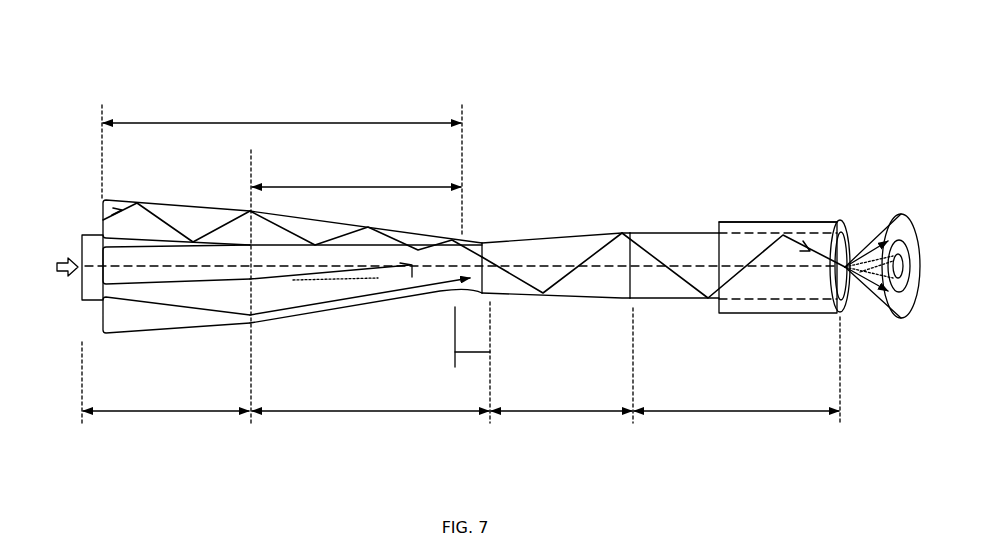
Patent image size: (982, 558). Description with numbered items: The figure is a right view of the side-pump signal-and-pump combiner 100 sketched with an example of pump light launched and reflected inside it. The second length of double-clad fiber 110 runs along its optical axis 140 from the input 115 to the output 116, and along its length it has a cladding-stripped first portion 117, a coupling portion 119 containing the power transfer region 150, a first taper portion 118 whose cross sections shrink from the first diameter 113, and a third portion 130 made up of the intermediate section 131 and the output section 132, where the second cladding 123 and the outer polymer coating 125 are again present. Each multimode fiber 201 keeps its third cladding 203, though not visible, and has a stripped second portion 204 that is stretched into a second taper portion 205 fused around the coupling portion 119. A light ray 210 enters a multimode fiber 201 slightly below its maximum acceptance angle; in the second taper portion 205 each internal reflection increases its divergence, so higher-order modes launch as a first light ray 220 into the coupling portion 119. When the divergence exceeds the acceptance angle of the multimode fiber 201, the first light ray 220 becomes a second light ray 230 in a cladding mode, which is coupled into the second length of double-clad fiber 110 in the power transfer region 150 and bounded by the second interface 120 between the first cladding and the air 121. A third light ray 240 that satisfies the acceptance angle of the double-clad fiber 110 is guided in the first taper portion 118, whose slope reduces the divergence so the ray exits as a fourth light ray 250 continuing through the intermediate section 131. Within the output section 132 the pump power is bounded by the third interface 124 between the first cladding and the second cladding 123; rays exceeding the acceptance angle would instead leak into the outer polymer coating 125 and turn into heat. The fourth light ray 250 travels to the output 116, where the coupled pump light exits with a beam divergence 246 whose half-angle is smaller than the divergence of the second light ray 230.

The side-pump signal-and-pump combiner 100 is at (489, 150).
The second length of double-clad fiber 110 is at (88, 230).
The input 115 is at (65, 257).
The multimode fiber 201 is at (190, 204).
The light ray 210 is at (121, 209).
The optical axis 140 is at (128, 268).
The first light ray 220 is at (298, 244).
The third cladding 203 is at (398, 248).
The second portion 204 is at (286, 119).
The second taper portion 205 is at (353, 184).
The second interface 120 is at (468, 240).
The second light ray 230 is at (485, 242).
The third light ray 240 is at (518, 283).
The fourth light ray 250 is at (627, 243).
The power transfer region 150 is at (600, 234).
The air 121 is at (573, 228).
The first diameter 113 is at (642, 232).
The intermediate section 131 is at (678, 232).
The third interface 124 is at (783, 300).
The second cladding 123 is at (737, 221).
The outer polymer coating 125 is at (778, 221).
The output section 132 is at (810, 221).
The output 116 is at (865, 262).
The beam divergence 246 is at (862, 293).
The first portion 117 is at (163, 414).
The coupling portion 119 is at (367, 414).
The first taper portion 118 is at (557, 414).
The third portion 130 is at (739, 414).